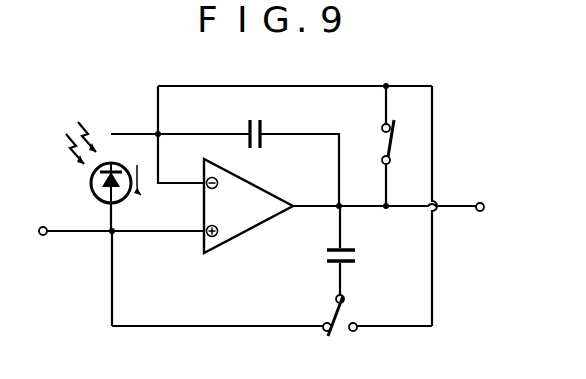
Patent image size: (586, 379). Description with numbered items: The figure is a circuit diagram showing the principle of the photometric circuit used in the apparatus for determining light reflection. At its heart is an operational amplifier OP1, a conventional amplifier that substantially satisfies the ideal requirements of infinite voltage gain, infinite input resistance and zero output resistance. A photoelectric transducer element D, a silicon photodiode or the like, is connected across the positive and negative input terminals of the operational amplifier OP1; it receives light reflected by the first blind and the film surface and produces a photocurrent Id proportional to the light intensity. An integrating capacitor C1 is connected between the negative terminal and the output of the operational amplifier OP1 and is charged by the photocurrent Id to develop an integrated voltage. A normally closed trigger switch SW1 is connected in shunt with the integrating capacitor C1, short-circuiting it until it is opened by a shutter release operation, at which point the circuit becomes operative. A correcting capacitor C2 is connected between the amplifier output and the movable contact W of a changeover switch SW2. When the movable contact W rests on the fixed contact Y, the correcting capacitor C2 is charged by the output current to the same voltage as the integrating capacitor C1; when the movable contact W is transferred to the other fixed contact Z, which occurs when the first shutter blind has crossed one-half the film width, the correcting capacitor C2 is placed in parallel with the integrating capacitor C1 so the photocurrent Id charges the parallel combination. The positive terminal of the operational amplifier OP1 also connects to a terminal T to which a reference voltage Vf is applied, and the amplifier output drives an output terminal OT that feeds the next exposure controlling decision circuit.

The operational amplifier OP1 is at (248, 206).
The integrating capacitor C1 is at (257, 121).
The trigger switch SW1 is at (385, 138).
The output terminal OT is at (480, 211).
The terminal T is at (43, 227).
The reference voltage Vf is at (19, 231).
The correcting capacitor C2 is at (326, 257).
The changeover switch SW2 is at (325, 308).
The movable contact W is at (344, 298).
The fixed contact Y is at (324, 330).
The fixed contact Z is at (354, 331).
The photoelectric transducer element D is at (91, 186).
The photocurrent Id is at (150, 189).